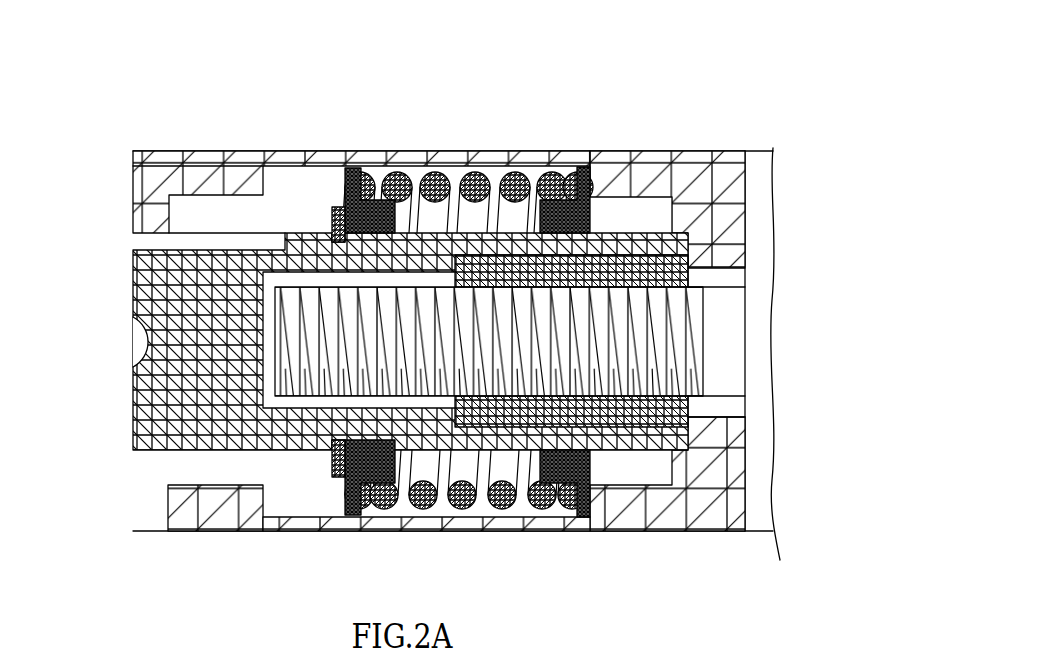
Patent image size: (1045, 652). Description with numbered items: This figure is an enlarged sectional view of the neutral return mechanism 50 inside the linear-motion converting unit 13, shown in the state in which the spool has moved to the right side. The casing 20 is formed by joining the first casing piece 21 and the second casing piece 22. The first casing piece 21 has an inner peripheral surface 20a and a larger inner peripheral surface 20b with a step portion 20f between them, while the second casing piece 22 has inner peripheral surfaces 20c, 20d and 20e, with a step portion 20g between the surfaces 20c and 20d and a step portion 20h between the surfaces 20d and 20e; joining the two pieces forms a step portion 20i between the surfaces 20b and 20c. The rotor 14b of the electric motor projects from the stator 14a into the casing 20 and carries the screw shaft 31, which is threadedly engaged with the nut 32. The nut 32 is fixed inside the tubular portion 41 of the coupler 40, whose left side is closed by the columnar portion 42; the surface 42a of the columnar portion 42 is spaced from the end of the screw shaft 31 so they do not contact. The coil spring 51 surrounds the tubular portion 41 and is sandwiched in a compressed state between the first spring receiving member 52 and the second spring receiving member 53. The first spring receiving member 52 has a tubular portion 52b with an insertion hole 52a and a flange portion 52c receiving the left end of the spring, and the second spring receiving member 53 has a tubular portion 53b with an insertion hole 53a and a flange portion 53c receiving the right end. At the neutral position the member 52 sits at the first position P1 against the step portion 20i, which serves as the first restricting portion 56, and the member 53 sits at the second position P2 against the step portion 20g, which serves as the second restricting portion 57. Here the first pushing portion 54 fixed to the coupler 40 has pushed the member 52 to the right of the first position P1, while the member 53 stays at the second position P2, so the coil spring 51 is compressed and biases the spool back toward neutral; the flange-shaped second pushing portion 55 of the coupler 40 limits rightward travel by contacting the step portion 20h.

The linear-motion converting unit 13 is at (439, 311).
The stator 14a is at (773, 531).
The rotor 14b is at (718, 373).
The casing 20 is at (439, 337).
The inner peripheral surface 20a is at (391, 427).
The inner peripheral surface 20b is at (232, 478).
The inner peripheral surface 20c is at (338, 505).
The inner peripheral surface 20d is at (640, 478).
The inner peripheral surface 20e is at (728, 414).
The step portion 20f is at (167, 458).
The step portion 20g is at (567, 516).
The step portion 20h is at (677, 463).
The step portion 20i is at (286, 501).
The first casing piece 21 is at (212, 150).
The second casing piece 22 is at (685, 180).
The screw shaft 31 is at (417, 507).
The nut 32 is at (508, 485).
The coupler 40 is at (193, 455).
The tubular portion 41 is at (488, 420).
The columnar portion 42 is at (135, 462).
The surface 42a is at (262, 342).
The neutral return mechanism 50 is at (494, 309).
The coil spring 51 is at (467, 210).
The first spring receiving member 52 is at (360, 151).
The insertion hole 52a is at (410, 215).
The tubular portion 52b is at (370, 200).
The flange portion 52c is at (365, 185).
The second spring receiving member 53 is at (603, 148).
The insertion hole 53a is at (518, 210).
The tubular portion 53b is at (563, 205).
The flange portion 53c is at (578, 170).
The first pushing portion 54 is at (334, 188).
The second pushing portion 55 is at (674, 198).
The first restricting portion 56 is at (363, 477).
The second restricting portion 57 is at (565, 483).
The first position P1 is at (262, 213).
The second position P2 is at (594, 212).